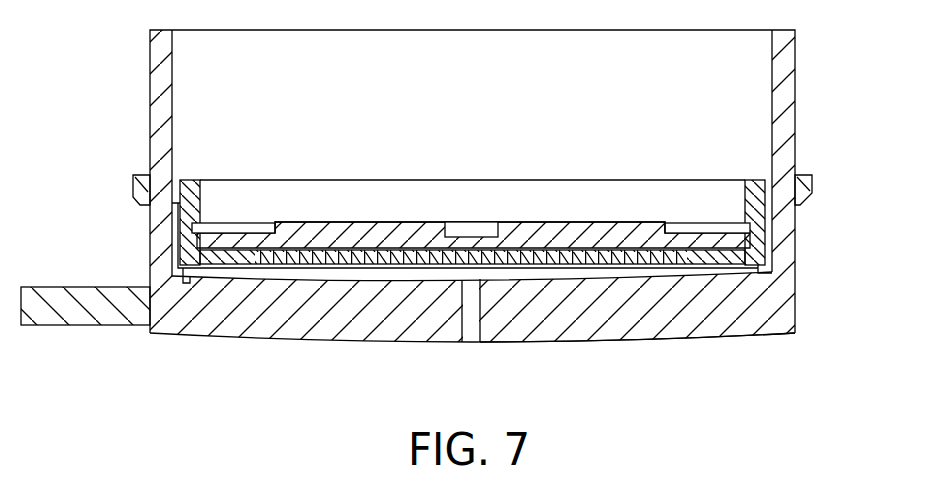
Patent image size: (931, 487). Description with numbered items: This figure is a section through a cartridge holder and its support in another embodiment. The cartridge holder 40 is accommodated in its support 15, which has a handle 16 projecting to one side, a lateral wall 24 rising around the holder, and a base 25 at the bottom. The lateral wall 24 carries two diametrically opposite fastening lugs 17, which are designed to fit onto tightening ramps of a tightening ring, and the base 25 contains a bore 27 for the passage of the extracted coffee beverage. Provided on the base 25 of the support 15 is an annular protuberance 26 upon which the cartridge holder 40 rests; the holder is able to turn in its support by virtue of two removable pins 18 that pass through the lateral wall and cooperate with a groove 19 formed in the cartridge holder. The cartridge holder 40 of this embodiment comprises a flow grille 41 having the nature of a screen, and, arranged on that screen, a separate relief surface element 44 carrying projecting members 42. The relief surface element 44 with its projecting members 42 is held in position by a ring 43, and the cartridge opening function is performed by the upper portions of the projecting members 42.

The support 15 is at (185, 315).
The handle 16 is at (62, 298).
The fastening lug 17 is at (808, 212).
The removable pin 18 is at (150, 207).
The groove 19 is at (768, 230).
The lateral wall 24 is at (778, 80).
The base 25 is at (572, 318).
The annular protuberance 26 is at (193, 272).
The bore 27 is at (468, 333).
The cartridge holder 40 is at (757, 205).
The flow grille 41 is at (603, 248).
The projecting member 42 is at (555, 222).
The ring 43 is at (204, 228).
The relief surface element 44 is at (262, 222).